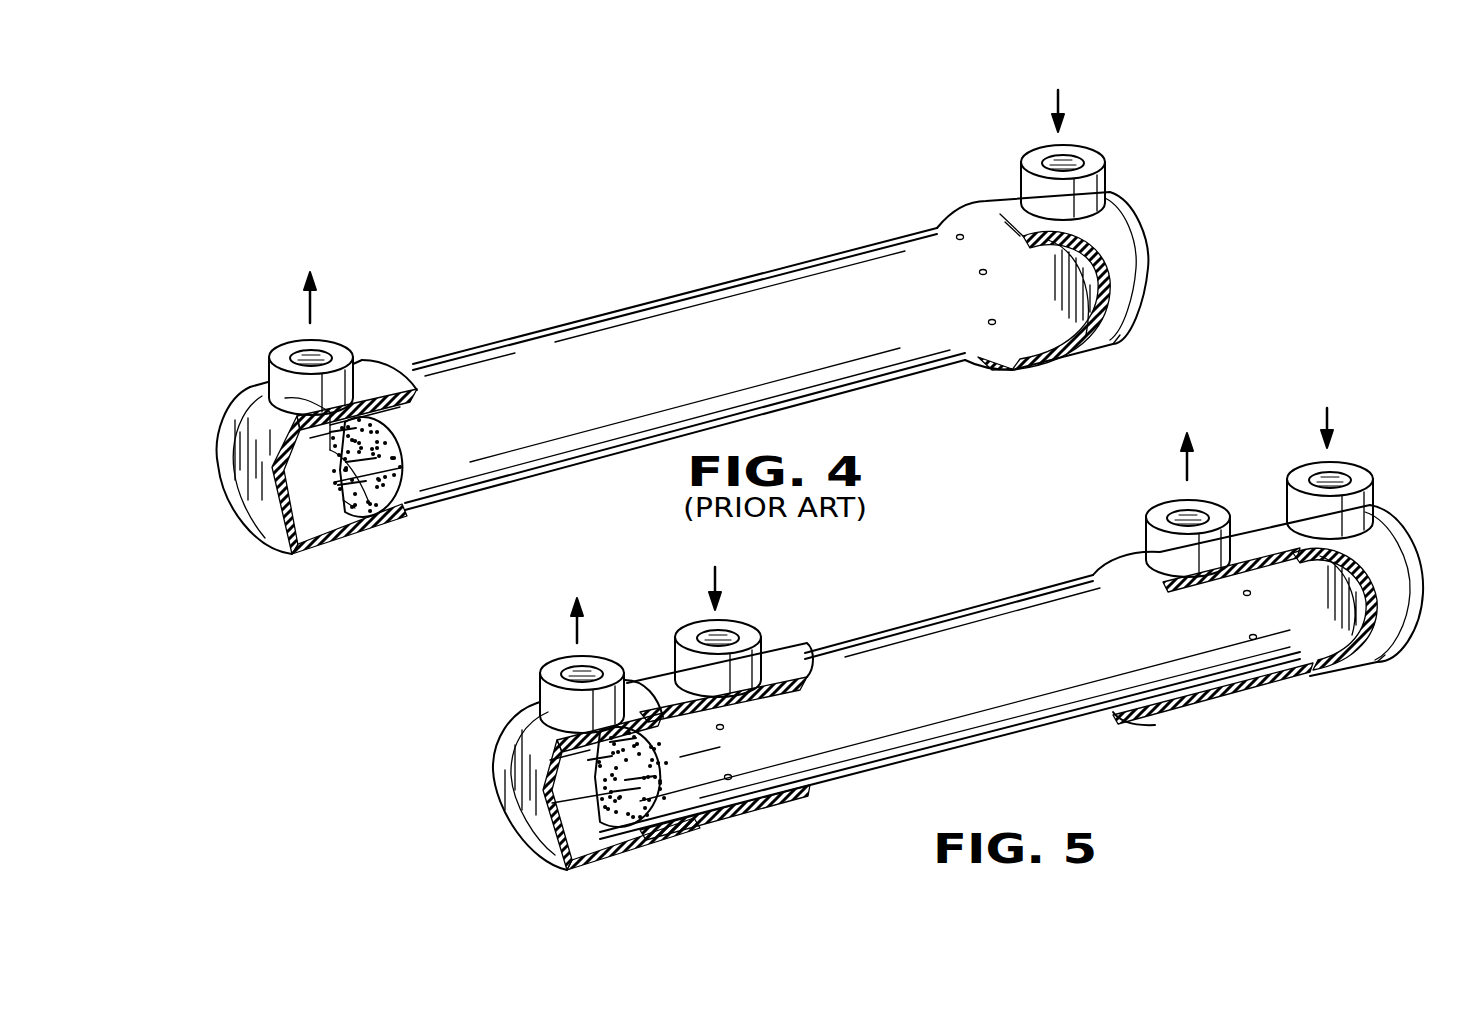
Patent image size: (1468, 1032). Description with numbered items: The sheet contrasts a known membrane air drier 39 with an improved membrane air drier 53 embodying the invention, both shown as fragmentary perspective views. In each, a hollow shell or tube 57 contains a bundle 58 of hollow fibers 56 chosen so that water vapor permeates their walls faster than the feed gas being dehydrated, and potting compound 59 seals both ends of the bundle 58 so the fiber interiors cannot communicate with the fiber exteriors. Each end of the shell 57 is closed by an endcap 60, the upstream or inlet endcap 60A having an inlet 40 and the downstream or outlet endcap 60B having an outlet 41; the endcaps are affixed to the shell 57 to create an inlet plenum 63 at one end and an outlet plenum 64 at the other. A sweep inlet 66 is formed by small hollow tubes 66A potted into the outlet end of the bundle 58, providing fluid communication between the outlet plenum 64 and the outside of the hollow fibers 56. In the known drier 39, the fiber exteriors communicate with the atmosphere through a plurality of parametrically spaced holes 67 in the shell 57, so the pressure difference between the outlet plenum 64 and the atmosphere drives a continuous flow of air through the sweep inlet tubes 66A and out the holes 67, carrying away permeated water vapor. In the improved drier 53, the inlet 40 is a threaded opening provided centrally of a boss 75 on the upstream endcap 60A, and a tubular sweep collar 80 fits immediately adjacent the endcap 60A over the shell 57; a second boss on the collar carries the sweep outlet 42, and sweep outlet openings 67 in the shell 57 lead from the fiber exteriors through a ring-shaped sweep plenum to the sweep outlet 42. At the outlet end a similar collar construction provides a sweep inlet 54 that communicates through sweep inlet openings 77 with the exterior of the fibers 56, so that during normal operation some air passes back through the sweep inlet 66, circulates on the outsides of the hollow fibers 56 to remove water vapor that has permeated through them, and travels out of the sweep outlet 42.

In FIG. 4, the known membrane air drier 39 is at (713, 249).
In FIG. 4, the inlet 40 is at (1068, 158).
In FIG. 5, the inlet 40 is at (1322, 476).
In FIG. 4, the outlet 41 is at (322, 352).
In FIG. 5, the outlet 41 is at (575, 668).
In FIG. 5, the sweep outlet 42 is at (1172, 512).
In FIG. 5, the improved membrane air drier 53 is at (917, 611).
In FIG. 5, the sweep inlet 54 is at (732, 632).
In FIG. 4, the hollow fibers 56 is at (362, 504).
In FIG. 4, the hollow shell or tube 57 is at (570, 350).
In FIG. 5, the hollow shell or tube 57 is at (1027, 730).
In FIG. 4, the bundle of hollow fibers 58 is at (341, 503).
In FIG. 4, the potting compound 59 is at (373, 417).
In FIG. 4, the endcap 60 is at (232, 394).
In FIG. 5, the endcap 60 is at (513, 762).
In FIG. 4, the upstream or inlet endcap 60A is at (1140, 265).
In FIG. 5, the upstream or inlet endcap 60A is at (1427, 613).
In FIG. 4, the downstream or outlet endcap 60B is at (223, 477).
In FIG. 5, the downstream or outlet endcap 60B is at (520, 823).
In FIG. 4, the inlet plenum 63 is at (1057, 314).
In FIG. 5, the inlet plenum 63 is at (1330, 637).
In FIG. 4, the outlet plenum 64 is at (300, 497).
In FIG. 4, the sweep inlet 66 is at (342, 474).
In FIG. 4, the small hollow tubes 66A is at (330, 450).
In FIG. 4, the sweep outlet openings 67 is at (988, 322).
In FIG. 5, the sweep outlet openings 67 is at (1250, 637).
In FIG. 5, the boss 75 is at (1358, 472).
In FIG. 5, the sweep inlet openings 77 is at (732, 775).
In FIG. 5, the sweep collar 80 is at (1217, 705).